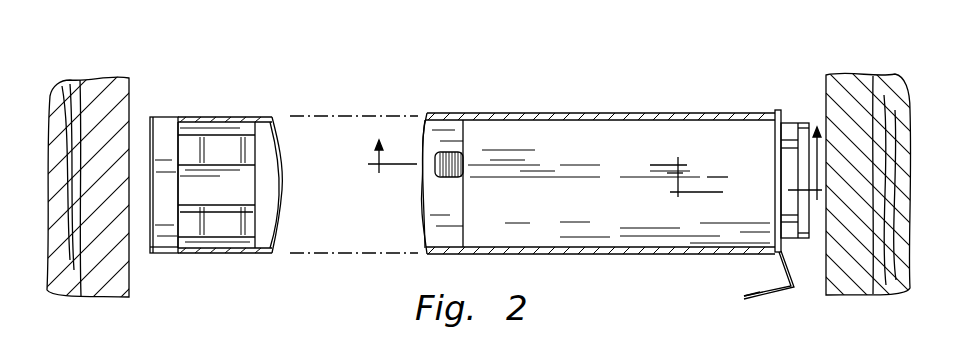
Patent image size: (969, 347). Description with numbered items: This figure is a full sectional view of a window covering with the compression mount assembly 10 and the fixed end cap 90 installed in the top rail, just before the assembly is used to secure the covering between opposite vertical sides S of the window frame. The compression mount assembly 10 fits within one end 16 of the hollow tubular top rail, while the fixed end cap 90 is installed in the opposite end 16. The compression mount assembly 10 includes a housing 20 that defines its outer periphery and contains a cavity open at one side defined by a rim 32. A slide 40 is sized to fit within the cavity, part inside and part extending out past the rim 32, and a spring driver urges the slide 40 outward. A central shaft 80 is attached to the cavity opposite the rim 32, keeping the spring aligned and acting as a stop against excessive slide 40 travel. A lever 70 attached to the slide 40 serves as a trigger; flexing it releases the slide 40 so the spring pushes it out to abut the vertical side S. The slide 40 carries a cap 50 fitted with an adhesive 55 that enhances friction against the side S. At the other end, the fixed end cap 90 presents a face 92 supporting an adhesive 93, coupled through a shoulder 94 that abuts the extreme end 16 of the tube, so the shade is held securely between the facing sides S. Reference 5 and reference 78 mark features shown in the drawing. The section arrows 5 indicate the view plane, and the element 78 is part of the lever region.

The vertical side S is at (130, 100).
The section line 5- 5 is at (596, 150).
The compression mount assembly 10 is at (540, 143).
The end 16 is at (267, 116).
The housing 20 is at (525, 212).
The rim 32 is at (775, 108).
The slide 40 is at (792, 130).
The cap 50 is at (802, 167).
The adhesive 55 is at (815, 228).
The lever 70 is at (785, 265).
The bracket leg 78 is at (762, 300).
The central shaft 80 is at (450, 178).
The fixed end cap 90 is at (228, 148).
The face 92 is at (153, 138).
The adhesive 93 is at (150, 247).
The shoulder 94 is at (180, 218).